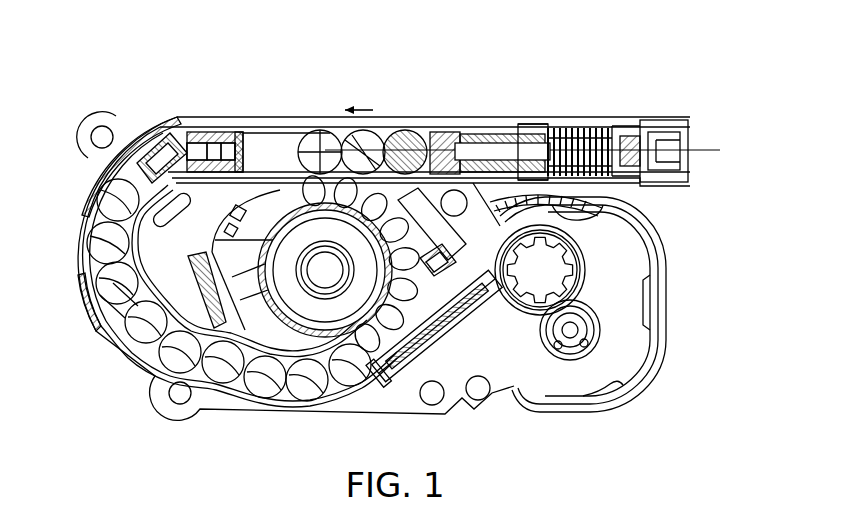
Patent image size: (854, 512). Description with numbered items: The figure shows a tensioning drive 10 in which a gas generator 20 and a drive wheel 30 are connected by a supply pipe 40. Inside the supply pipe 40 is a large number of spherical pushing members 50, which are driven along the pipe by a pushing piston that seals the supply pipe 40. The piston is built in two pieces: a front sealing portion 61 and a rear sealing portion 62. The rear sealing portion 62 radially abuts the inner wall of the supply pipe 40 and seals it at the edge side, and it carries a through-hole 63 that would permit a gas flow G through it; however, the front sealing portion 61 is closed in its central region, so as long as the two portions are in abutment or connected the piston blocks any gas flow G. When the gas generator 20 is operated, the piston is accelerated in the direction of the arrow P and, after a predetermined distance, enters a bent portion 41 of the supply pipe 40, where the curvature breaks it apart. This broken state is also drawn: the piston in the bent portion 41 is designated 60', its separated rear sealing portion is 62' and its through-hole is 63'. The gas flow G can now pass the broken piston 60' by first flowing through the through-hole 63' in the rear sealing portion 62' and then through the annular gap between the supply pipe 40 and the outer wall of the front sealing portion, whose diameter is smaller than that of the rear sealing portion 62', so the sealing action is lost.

The tensioning drive 10 is at (702, 113).
The gas generator 20 is at (596, 130).
The drive wheel 30 is at (389, 125).
The supply pipe 40 is at (312, 128).
The bent portion 41 is at (195, 130).
The spherical pushing members 50 is at (90, 236).
The front sealing portion 61 is at (152, 134).
The rear sealing portion 62 is at (529, 131).
The rear sealing portion after separation 62' is at (244, 126).
The through-hole 63 is at (502, 133).
The through-hole after separation 63' is at (212, 120).
The broken pushing piston 60' is at (222, 103).
The gas flow G is at (170, 126).
The direction of piston acceleration P is at (361, 104).